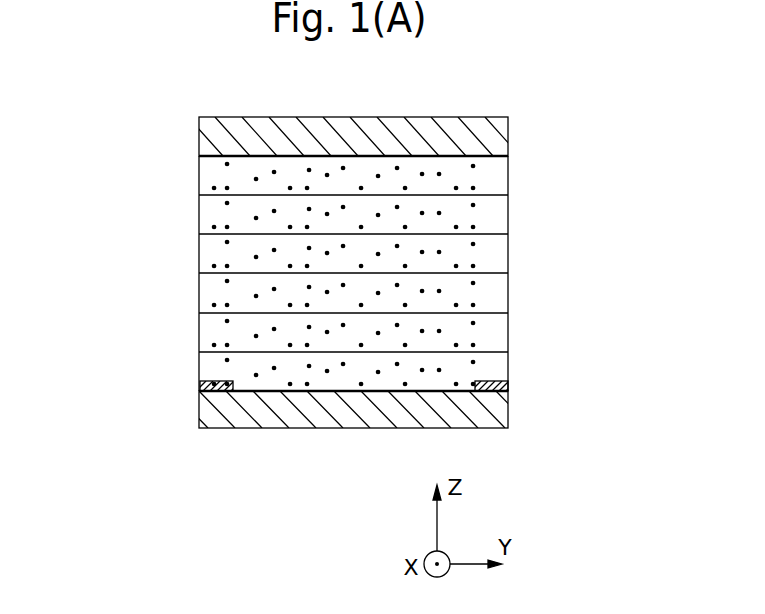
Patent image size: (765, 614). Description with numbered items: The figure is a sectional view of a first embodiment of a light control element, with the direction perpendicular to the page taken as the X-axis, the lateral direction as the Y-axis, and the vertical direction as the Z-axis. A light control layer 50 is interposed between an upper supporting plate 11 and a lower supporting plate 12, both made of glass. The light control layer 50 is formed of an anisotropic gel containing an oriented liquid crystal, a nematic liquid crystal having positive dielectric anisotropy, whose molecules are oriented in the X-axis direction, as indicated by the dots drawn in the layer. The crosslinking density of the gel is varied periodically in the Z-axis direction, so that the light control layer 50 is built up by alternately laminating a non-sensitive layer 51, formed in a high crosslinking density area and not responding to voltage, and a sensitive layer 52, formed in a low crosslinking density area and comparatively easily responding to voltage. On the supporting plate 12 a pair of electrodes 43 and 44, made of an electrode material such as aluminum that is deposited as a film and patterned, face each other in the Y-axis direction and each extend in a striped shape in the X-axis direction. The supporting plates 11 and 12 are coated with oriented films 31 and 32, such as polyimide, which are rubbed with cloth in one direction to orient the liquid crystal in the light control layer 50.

The supporting plate 11 is at (207, 145).
The supporting plate 12 is at (207, 410).
The oriented film 31 is at (512, 156).
The oriented film 32 is at (508, 392).
The electrode 43 is at (199, 388).
The electrode 44 is at (509, 385).
The light control layer 50 is at (143, 153).
The non-sensitive layer 51 is at (498, 257).
The sensitive layer 52 is at (497, 296).